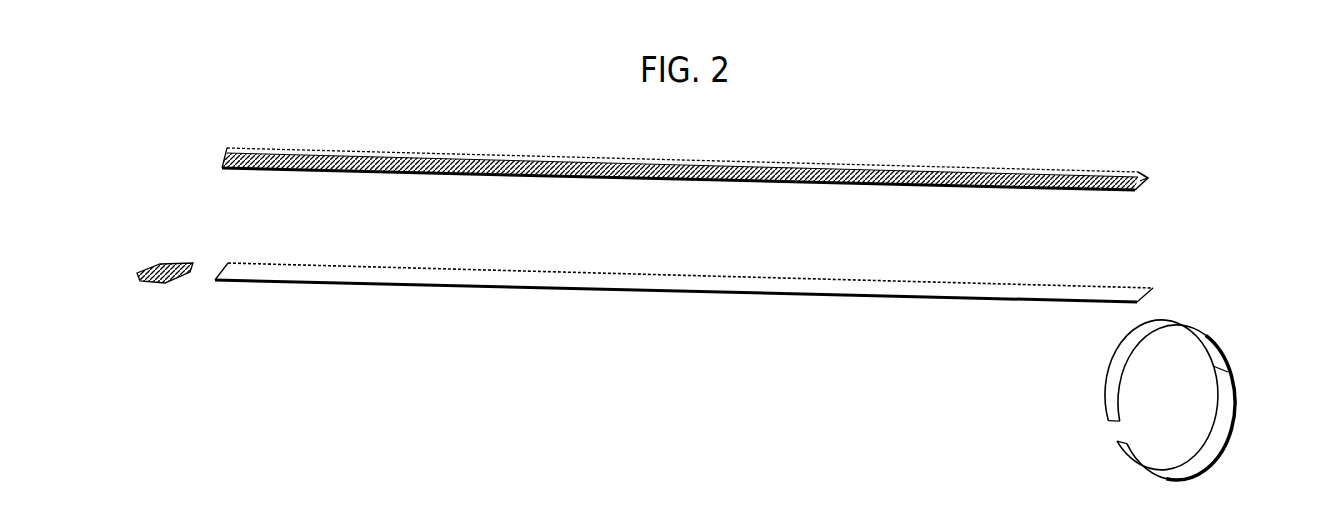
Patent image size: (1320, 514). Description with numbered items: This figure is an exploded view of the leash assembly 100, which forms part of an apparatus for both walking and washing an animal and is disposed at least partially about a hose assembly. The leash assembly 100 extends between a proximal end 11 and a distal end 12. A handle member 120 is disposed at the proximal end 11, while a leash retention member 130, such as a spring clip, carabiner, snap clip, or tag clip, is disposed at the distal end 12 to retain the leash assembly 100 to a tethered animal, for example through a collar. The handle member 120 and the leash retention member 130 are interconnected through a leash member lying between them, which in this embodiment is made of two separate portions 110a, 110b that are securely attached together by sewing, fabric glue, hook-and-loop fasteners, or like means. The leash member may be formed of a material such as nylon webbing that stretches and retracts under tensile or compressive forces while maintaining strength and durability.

The leash assembly 100 is at (374, 370).
The leash member portion 110a is at (781, 310).
The leash member portion 110b is at (856, 150).
The proximal end 11 is at (1212, 162).
The distal end 12 is at (197, 152).
The handle member 120 is at (1222, 330).
The leash retention member 130 is at (143, 294).